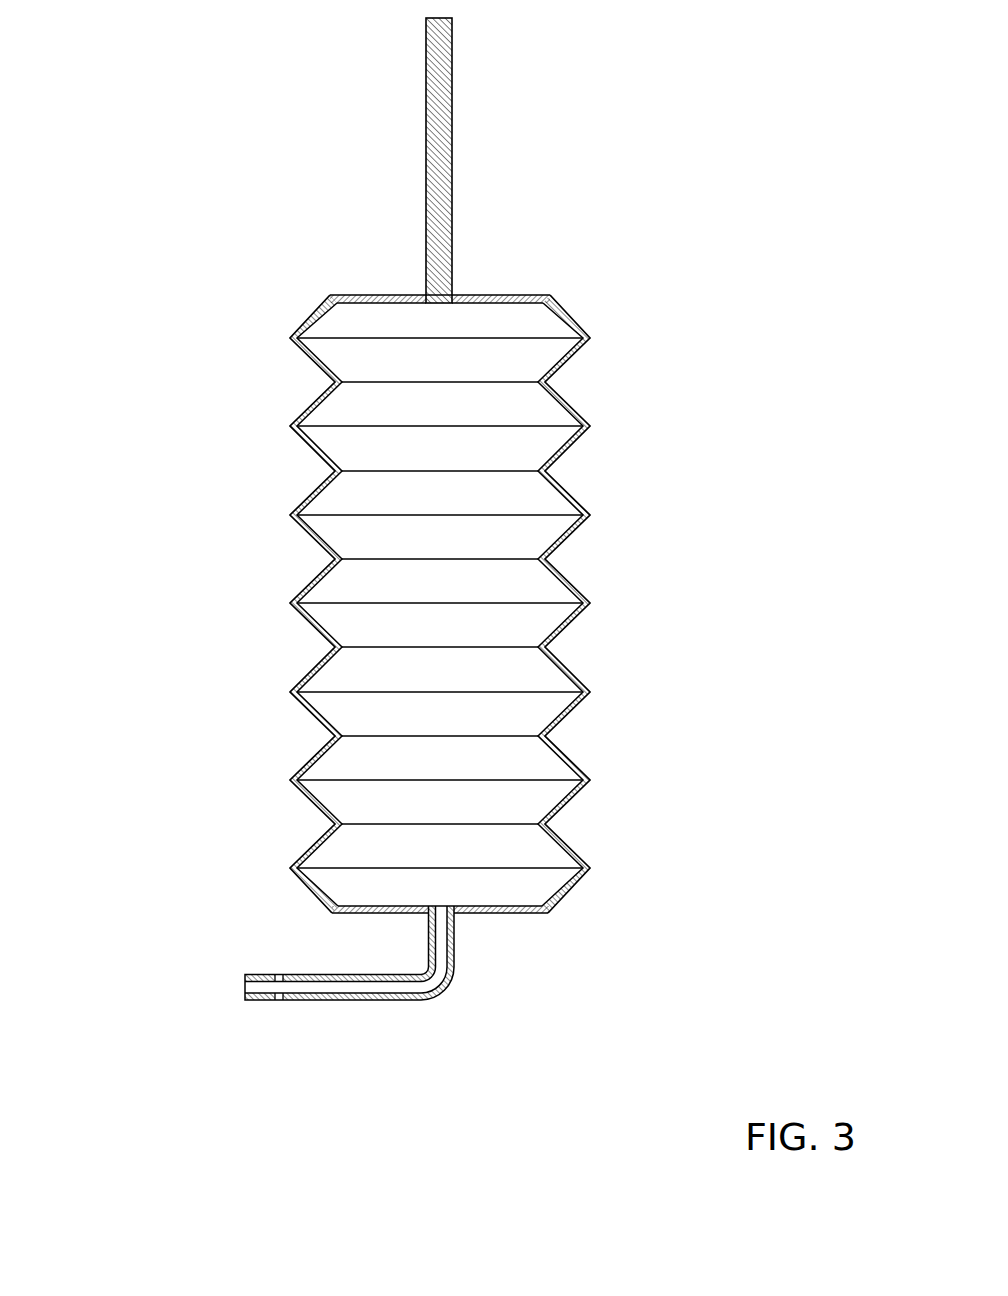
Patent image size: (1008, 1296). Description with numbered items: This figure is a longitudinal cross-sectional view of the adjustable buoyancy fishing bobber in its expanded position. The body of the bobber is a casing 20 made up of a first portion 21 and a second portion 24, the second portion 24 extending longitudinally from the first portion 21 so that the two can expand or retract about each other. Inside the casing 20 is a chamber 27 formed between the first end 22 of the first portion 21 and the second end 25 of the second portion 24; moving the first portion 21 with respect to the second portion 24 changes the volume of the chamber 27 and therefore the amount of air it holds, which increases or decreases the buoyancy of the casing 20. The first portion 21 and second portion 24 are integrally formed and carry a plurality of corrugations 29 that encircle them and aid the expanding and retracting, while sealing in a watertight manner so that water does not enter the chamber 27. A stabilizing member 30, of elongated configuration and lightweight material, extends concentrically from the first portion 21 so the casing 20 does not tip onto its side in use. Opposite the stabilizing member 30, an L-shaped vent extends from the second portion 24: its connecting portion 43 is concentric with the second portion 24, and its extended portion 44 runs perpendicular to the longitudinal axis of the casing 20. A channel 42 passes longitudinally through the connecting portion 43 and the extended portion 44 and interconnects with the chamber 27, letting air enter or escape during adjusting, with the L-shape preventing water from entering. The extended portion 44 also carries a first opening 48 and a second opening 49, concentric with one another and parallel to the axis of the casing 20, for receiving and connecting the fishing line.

The casing 20 is at (428, 604).
The first portion 21 is at (305, 413).
The first end 22 is at (500, 294).
The second portion 24 is at (305, 767).
The second end 25 is at (522, 913).
The chamber 27 is at (512, 623).
The corrugations 29 is at (590, 514).
The stabilizing member 30 is at (452, 132).
The channel 42 is at (398, 990).
The connecting portion 43 is at (457, 948).
The extended portion 44 is at (250, 1002).
The first opening 48 is at (276, 974).
The second opening 49 is at (283, 1002).